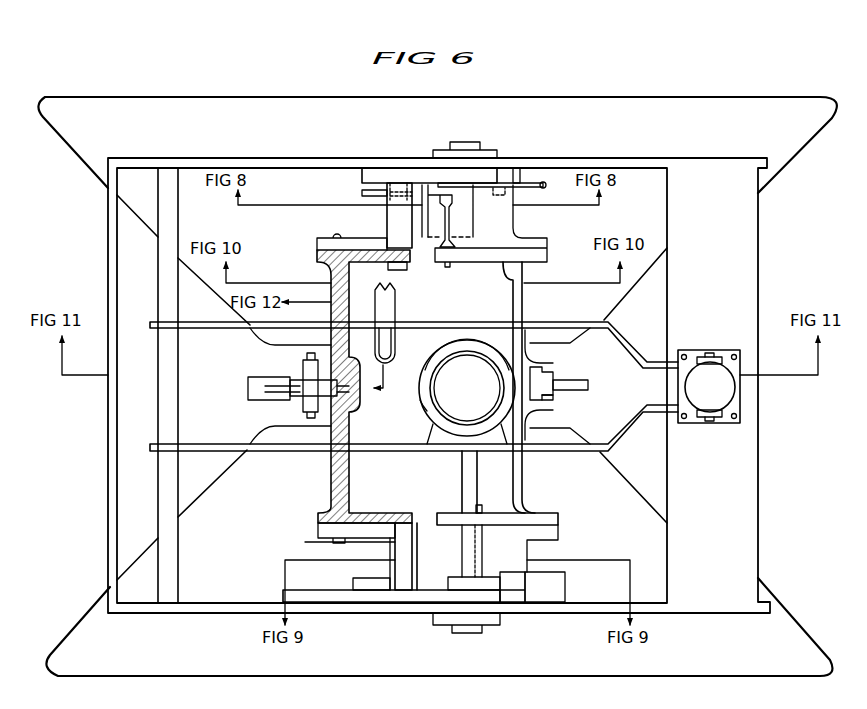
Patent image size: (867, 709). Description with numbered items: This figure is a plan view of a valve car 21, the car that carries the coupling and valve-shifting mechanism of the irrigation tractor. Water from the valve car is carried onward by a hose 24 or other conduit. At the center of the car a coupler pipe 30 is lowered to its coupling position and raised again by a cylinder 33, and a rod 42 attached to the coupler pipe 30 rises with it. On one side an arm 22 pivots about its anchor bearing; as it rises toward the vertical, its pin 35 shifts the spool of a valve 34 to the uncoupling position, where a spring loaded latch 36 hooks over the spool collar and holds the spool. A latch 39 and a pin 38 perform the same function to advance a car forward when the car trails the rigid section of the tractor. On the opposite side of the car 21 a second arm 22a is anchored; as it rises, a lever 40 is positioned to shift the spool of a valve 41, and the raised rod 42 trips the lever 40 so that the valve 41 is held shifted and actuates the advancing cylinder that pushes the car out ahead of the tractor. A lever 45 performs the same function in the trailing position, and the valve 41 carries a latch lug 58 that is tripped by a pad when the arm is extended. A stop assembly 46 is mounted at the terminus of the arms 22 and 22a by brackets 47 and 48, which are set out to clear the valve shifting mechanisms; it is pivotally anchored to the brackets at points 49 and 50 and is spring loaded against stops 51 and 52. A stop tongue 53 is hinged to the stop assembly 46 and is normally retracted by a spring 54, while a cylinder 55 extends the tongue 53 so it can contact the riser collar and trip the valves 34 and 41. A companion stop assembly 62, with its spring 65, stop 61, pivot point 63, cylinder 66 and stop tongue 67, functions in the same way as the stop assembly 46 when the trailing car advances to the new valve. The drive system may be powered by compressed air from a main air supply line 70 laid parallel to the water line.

The valve car 21 is at (758, 240).
The arm 22 is at (370, 168).
The arm 22a is at (393, 604).
The hose 24 is at (497, 378).
The coupler pipe 30 is at (470, 320).
The cylinder 33 is at (742, 392).
The valve 34 is at (467, 208).
The pin 35 is at (498, 183).
The spring loaded latch 36 is at (530, 183).
The pin 38 is at (409, 183).
The latch 39 is at (362, 192).
The lever 40 is at (488, 577).
The valve 41 is at (567, 585).
The rod 42 is at (462, 466).
The lever 45 is at (343, 581).
The stop assembly 46 is at (330, 473).
The bracket 47 is at (387, 225).
The bracket 48 is at (417, 513).
The pivot point 49 is at (318, 238).
The pivot point 50 is at (305, 542).
The stop 51 is at (395, 272).
The stop 52 is at (393, 513).
The stop tongue 53 is at (256, 400).
The spring 54 is at (320, 384).
The cylinder 55 is at (248, 385).
The latch lug 58 is at (480, 505).
The stop 61 is at (547, 513).
The stop assembly 62 is at (527, 300).
The pivot point 63 is at (520, 237).
The spring 65 is at (570, 375).
The cylinder 66 is at (590, 385).
The stop tongue 67 is at (567, 395).
The main air supply line 70 is at (197, 505).